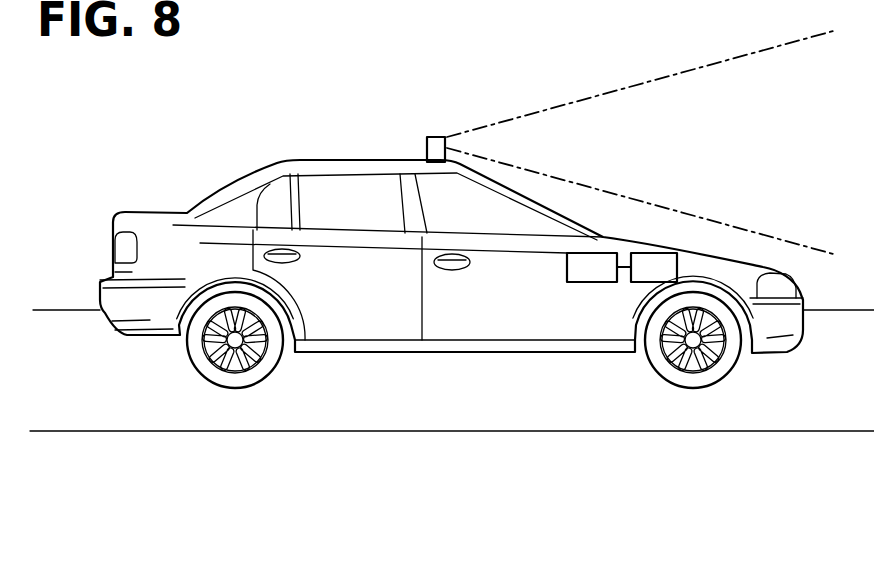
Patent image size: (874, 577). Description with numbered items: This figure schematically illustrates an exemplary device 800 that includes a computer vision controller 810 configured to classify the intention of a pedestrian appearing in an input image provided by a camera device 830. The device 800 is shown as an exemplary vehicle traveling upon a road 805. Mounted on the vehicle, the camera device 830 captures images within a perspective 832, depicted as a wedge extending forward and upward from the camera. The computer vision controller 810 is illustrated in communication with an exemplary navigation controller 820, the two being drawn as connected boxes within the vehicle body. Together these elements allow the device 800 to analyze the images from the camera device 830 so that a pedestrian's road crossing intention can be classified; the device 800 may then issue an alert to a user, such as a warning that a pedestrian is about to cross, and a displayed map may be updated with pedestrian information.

The device 800 is at (352, 160).
The road 805 is at (807, 388).
The computer vision controller 810 is at (593, 274).
The navigation controller 820 is at (658, 274).
The camera device 830 is at (440, 133).
The perspective 832 is at (600, 88).